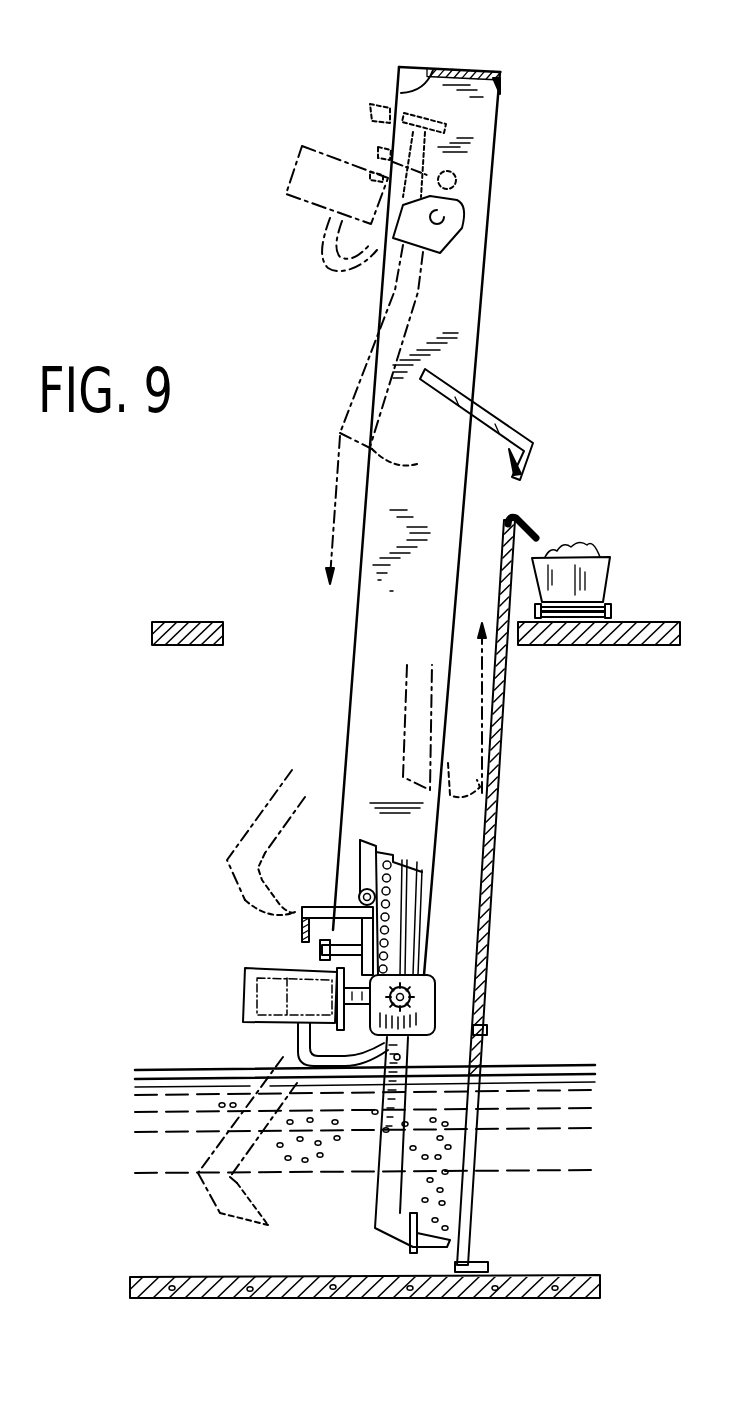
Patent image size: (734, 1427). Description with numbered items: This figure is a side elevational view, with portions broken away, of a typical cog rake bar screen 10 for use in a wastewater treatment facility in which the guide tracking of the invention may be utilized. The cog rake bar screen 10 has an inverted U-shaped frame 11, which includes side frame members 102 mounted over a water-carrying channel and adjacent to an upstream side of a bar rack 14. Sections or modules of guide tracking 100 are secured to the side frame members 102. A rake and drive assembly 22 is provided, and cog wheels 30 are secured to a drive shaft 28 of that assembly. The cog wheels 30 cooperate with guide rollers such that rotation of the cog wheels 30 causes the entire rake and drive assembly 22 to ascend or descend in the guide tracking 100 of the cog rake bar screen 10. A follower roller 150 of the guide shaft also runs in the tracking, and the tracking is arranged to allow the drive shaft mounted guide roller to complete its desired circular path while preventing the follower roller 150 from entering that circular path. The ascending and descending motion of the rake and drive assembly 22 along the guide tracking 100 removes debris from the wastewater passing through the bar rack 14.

The cog rake bar screen 10 is at (528, 112).
The inverted U-shaped frame 11 is at (486, 288).
The bar rack 14 is at (483, 1057).
The rake and drive assembly 22 is at (358, 138).
The drive shaft 28 is at (418, 998).
The cog wheels 30 is at (422, 1006).
The guide tracking 100 is at (360, 848).
The side frame members 102 is at (415, 67).
The follower roller 150 is at (358, 888).